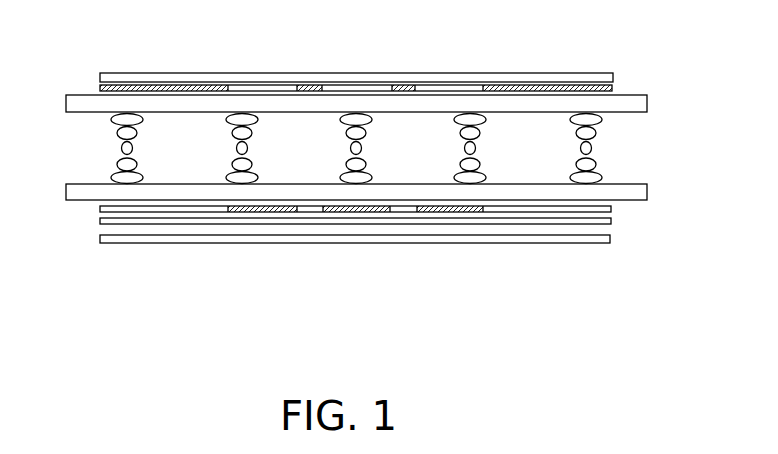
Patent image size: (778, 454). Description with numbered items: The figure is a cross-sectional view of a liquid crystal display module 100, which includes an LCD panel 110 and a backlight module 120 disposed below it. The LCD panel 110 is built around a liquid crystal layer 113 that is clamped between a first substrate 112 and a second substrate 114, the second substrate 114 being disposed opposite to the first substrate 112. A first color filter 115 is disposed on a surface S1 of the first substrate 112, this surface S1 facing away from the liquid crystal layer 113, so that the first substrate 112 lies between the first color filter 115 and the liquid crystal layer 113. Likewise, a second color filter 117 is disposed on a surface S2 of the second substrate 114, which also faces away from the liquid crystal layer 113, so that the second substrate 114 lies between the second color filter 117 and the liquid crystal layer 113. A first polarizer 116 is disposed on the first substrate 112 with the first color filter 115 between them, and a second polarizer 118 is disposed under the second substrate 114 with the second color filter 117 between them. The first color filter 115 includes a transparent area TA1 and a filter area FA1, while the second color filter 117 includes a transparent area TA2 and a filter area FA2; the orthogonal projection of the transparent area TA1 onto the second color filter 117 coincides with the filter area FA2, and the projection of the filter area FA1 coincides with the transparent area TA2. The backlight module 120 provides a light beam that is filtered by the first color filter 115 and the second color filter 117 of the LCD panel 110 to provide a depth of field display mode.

The LCD module 100 is at (732, 382).
The LCD panel 110 is at (59, 73).
The first substrate 112 is at (635, 106).
The liquid crystal layer 113 is at (650, 113).
The second substrate 114 is at (635, 193).
The first color filter 115 is at (607, 89).
The first polarizer 116 is at (605, 79).
The second color filter 117 is at (605, 209).
The second polarizer 118 is at (605, 221).
The backlight module 120 is at (597, 243).
The surface S1 is at (88, 94).
The surface S2 is at (87, 201).
The filter area FA1 is at (173, 84).
The transparent area TA1 is at (268, 84).
The filter area FA2 is at (268, 213).
The transparent area TA2 is at (172, 213).